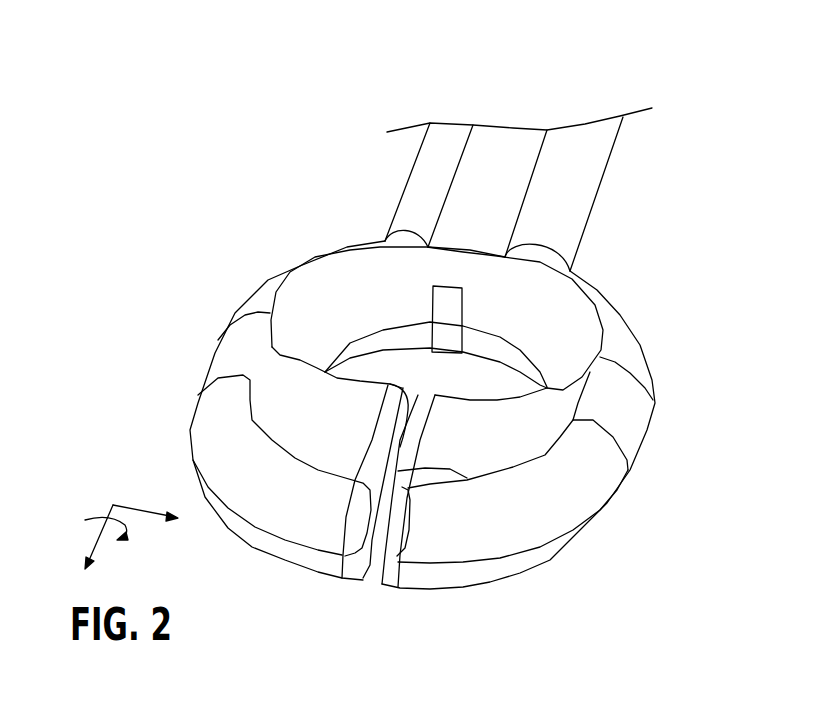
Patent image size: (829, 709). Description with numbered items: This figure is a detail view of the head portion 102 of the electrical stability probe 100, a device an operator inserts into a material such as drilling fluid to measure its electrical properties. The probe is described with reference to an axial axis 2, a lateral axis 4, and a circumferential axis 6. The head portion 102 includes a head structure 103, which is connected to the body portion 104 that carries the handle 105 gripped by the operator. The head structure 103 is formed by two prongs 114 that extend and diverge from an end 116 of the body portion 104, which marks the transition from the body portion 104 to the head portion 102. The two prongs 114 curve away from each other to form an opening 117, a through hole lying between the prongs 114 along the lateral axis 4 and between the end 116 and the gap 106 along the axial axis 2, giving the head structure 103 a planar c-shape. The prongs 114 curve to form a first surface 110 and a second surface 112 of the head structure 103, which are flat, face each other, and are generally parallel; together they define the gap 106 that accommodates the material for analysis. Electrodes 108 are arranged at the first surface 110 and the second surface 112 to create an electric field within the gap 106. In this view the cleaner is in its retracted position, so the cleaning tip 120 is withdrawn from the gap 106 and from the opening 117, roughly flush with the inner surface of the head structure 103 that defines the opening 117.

The electrical stability probe 100 is at (155, 236).
The head portion 102 is at (624, 525).
The head structure 103 is at (227, 360).
The body portion 104 is at (397, 162).
The handle 105 is at (505, 148).
The gap 106 is at (373, 572).
The electrodes 108 is at (405, 433).
The first surface 110 is at (410, 470).
The second surface 112 is at (383, 465).
The prongs 114 is at (287, 268).
The end 116 is at (387, 240).
The opening 117 is at (383, 365).
The cleaning tip 120 is at (450, 298).
The axial axis 2 is at (98, 547).
The lateral axis 4 is at (140, 507).
The circumferential axis 6 is at (85, 522).